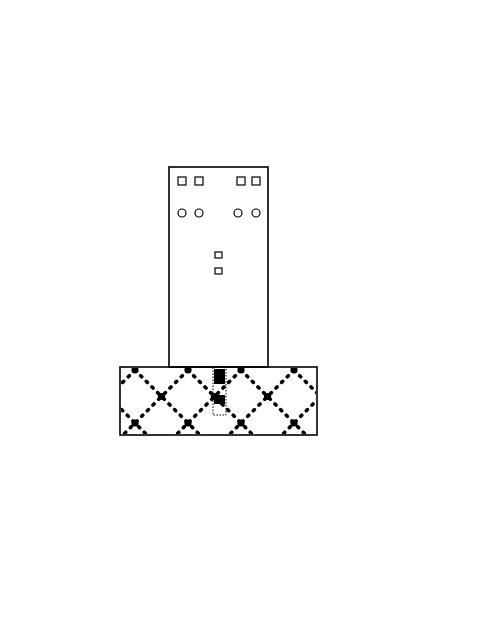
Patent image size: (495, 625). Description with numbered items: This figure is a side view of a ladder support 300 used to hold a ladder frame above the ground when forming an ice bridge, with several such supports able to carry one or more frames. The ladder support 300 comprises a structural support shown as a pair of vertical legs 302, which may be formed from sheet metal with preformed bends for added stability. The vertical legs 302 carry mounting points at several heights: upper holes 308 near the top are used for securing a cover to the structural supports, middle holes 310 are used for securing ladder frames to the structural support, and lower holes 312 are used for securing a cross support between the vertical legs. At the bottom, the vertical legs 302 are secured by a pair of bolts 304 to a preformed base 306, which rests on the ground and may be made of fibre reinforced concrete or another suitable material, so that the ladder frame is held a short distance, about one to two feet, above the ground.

The ladder support 300 is at (256, 124).
The vertical legs 302 is at (268, 300).
The bolts 304 is at (213, 362).
The preformed base 306 is at (317, 402).
The upper holes 308 is at (182, 175).
The middle holes 310 is at (261, 210).
The lower holes 312 is at (213, 271).